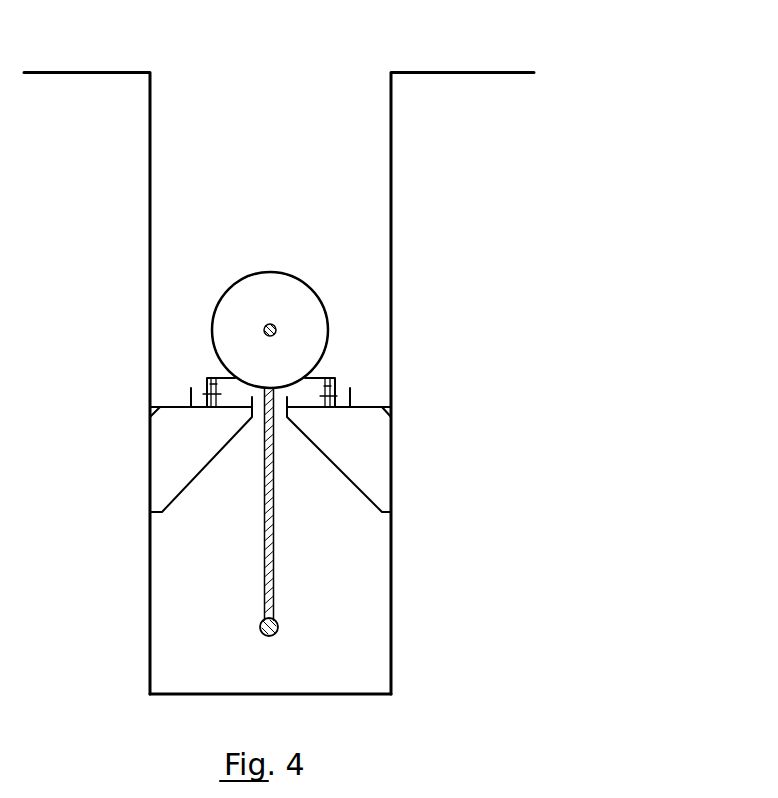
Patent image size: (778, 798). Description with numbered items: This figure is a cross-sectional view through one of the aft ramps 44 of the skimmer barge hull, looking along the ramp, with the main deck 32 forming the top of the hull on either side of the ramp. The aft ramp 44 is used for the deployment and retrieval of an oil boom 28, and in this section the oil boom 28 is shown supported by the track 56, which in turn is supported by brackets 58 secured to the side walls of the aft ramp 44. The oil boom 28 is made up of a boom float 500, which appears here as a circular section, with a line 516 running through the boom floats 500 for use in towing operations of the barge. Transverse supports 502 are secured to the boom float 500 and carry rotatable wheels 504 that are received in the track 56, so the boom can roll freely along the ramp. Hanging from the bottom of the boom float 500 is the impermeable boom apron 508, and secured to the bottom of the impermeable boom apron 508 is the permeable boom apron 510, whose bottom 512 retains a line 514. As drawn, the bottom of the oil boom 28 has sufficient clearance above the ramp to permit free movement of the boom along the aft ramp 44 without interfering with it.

The main deck 32 is at (450, 72).
The aft ramp 44 is at (393, 625).
The brackets 58 is at (177, 453).
The oil boom 28 is at (297, 295).
The boom float 500 is at (242, 292).
The line 516 is at (270, 324).
The transverse supports 502 is at (212, 376).
The rotatable wheels 504 is at (209, 391).
The track 56 is at (198, 397).
The impermeable boom apron 508 is at (271, 484).
The permeable boom apron 510 is at (273, 570).
The bottom of the permeable apron 512 is at (263, 622).
The line 514 is at (277, 630).